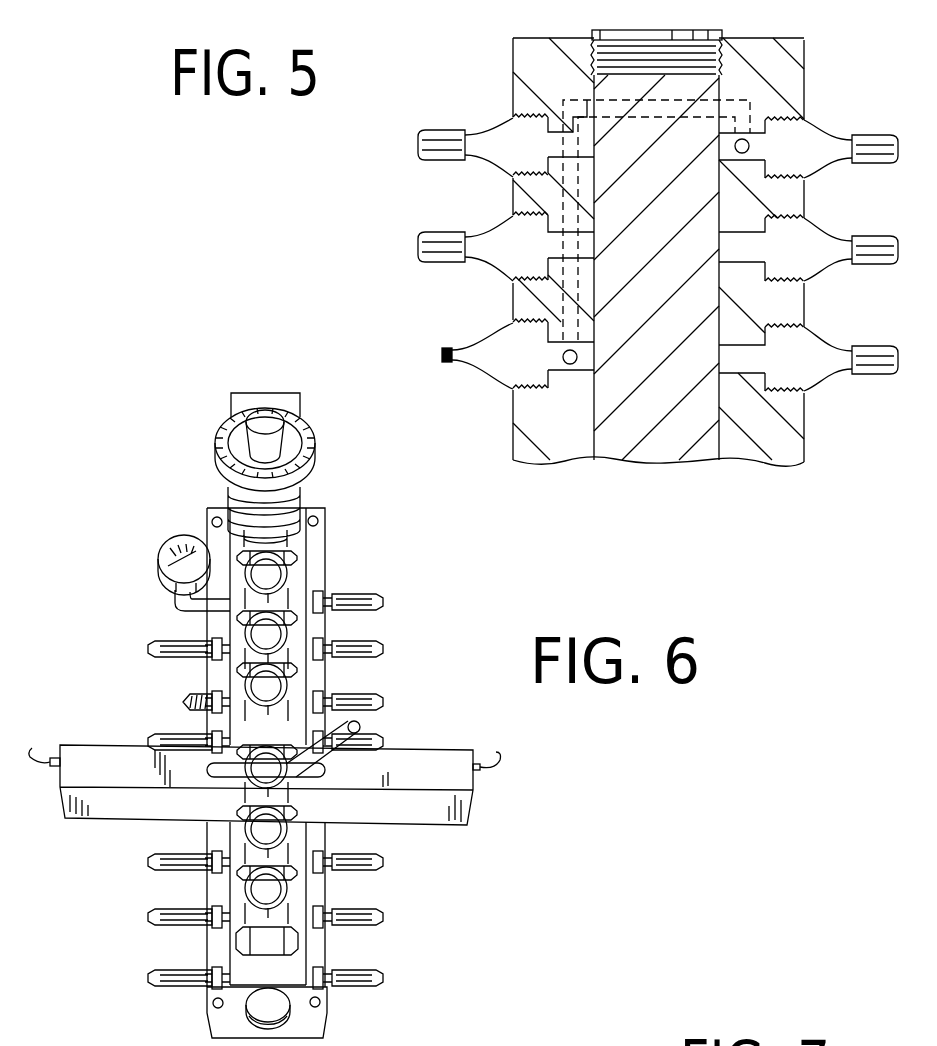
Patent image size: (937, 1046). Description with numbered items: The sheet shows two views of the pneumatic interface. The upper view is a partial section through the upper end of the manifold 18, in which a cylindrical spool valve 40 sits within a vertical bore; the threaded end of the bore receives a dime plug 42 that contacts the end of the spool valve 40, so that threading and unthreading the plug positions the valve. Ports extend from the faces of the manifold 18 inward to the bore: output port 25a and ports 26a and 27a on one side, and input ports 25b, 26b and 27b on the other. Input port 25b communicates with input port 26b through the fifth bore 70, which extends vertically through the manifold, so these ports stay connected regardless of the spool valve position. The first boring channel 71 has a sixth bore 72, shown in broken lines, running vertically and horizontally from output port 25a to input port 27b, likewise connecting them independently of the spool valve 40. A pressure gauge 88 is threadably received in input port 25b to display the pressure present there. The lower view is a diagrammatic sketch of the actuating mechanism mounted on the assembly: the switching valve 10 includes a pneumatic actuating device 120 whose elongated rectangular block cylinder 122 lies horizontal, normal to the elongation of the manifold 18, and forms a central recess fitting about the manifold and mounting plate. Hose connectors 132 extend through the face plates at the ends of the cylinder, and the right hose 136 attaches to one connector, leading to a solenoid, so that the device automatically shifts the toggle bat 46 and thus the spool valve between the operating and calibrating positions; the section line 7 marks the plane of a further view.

In FIG. 6, the switching valve 10 is at (327, 430).
In FIG. 5, the manifold 18 is at (802, 455).
In FIG. 6, the manifold 18 is at (307, 957).
In FIG. 5, the output port 25a is at (790, 121).
In FIG. 5, the input port 25b is at (515, 119).
In FIG. 5, the port 26a is at (790, 219).
In FIG. 5, the input port 26b is at (520, 282).
In FIG. 5, the port 27a is at (790, 328).
In FIG. 5, the input port 27b is at (520, 390).
In FIG. 5, the spool valve 40 is at (660, 237).
In FIG. 5, the dime plug 42 is at (705, 30).
In FIG. 6, the toggle bat 46 is at (360, 727).
In FIG. 5, the fifth bore 70 is at (573, 198).
In FIG. 5, the first boring channel 71 is at (567, 318).
In FIG. 5, the sixth bore 72 is at (585, 98).
In FIG. 5, the pressure gauge 88 is at (443, 148).
In FIG. 6, the pneumatic actuating device 120 is at (412, 832).
In FIG. 6, the block cylinder 122 is at (128, 806).
In FIG. 6, the hose connector 132 is at (40, 755).
In FIG. 6, the right hose 136 is at (498, 758).
In FIG. 6, the section line 7- 7 is at (22, 768).